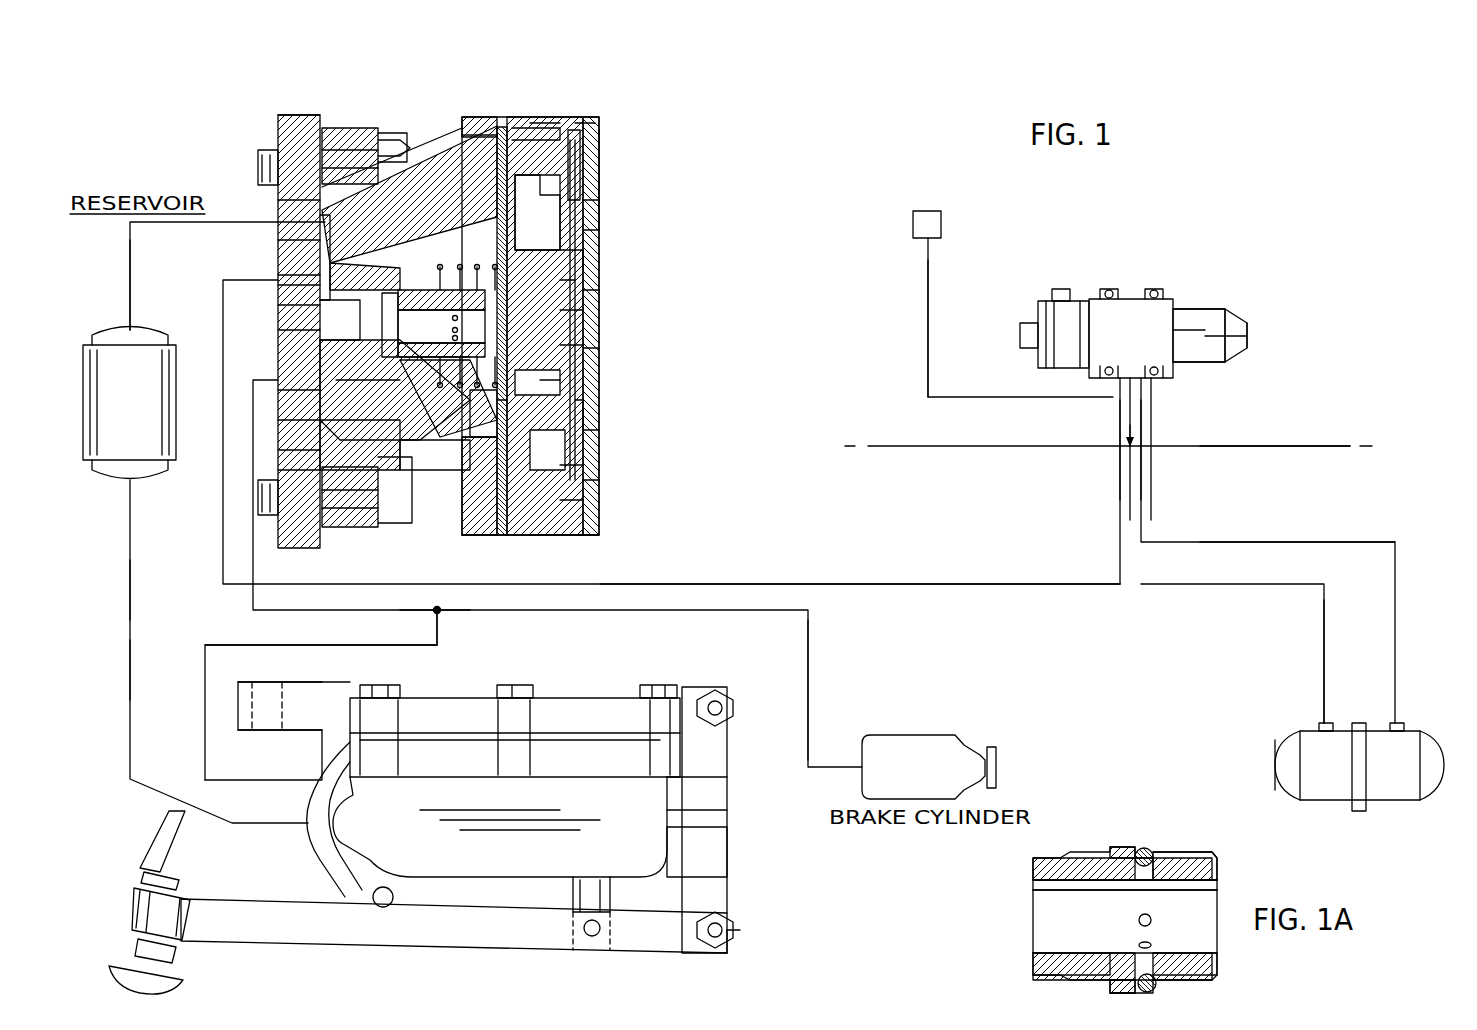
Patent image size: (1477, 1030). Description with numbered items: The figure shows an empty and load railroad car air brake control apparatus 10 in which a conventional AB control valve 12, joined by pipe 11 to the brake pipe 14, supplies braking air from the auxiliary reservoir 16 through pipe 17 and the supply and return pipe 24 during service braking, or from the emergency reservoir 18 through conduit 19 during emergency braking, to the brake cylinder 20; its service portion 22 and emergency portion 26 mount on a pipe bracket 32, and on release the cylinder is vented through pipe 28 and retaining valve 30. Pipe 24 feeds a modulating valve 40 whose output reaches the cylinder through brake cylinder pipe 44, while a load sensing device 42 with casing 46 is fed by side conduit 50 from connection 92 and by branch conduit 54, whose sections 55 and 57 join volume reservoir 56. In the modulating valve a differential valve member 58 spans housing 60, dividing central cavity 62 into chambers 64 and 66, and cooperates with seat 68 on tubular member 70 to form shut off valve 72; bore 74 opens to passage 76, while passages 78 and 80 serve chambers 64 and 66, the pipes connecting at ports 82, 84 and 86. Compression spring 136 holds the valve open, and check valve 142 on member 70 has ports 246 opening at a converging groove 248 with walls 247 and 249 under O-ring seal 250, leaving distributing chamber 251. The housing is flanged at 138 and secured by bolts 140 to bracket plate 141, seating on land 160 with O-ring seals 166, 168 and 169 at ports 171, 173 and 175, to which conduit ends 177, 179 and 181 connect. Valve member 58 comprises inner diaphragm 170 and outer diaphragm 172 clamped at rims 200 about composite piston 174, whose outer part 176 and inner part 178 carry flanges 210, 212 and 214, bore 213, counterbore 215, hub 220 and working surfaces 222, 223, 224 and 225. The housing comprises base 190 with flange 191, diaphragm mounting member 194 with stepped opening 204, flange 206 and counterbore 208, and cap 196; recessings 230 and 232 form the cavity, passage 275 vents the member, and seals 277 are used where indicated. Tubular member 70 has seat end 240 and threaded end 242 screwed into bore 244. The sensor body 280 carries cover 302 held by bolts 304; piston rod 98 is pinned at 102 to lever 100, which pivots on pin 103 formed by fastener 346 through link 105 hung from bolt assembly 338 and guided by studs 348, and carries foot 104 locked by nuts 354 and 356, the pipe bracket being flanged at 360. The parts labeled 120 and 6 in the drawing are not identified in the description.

In FIG. 1, the empty and load railroad car air brake control apparatus 10 is at (1295, 290).
In FIG. 1, the pipe 11 is at (1118, 420).
In FIG. 1, the AB control valve 12 is at (1190, 262).
In FIG. 1, the brake pipe 14 is at (1300, 445).
In FIG. 1, the auxiliary reservoir 16 is at (1440, 748).
In FIG. 1, the pipe 17 is at (1340, 541).
In FIG. 1, the emergency reservoir 18 is at (1275, 758).
In FIG. 1, the conduit 19 is at (1325, 641).
In FIG. 1, the brake cylinder 20 is at (975, 745).
In FIG. 1, the service portion 22 is at (1061, 282).
In FIG. 1, the braking air supply and return pipe 24 is at (1012, 583).
In FIG. 1, the emergency portion 26 is at (1205, 305).
In FIG. 1, the pipe 28 is at (928, 305).
In FIG. 1, the retaining valve 30 is at (948, 218).
In FIG. 1, the pipe bracket 32 is at (1130, 290).
In FIG. 1, the modulating valve 40 is at (618, 150).
In FIG. 1, the load sensing device 42 is at (770, 930).
In FIG. 1, the brake cylinder pipe 44 is at (810, 664).
In FIG. 1, the casing 46 is at (520, 850).
In FIG. 1, the side conduit 50 is at (206, 644).
In FIG. 1, the branch conduit 54 is at (129, 587).
In FIG. 1, the section 55 is at (130, 676).
In FIG. 1, the volume reservoir 56 is at (112, 432).
In FIG. 1, the section 57 is at (130, 260).
In FIG. 1, the differential valve member 58 is at (600, 292).
In FIG. 1, the valve housing 60 is at (520, 135).
In FIG. 1, the central cavity 62 is at (465, 135).
In FIG. 1, the chamber 64 is at (403, 145).
In FIG. 1, the chamber 66 is at (592, 210).
In FIG. 1, the annular valve seat 68 is at (600, 348).
In FIG. 1, the tubular member 70 is at (420, 395).
In FIG. 1A, the tubular member 70 is at (1190, 865).
In FIG. 1, the air flow shut off valve 72 is at (478, 430).
In FIG. 1, the bore 74 is at (415, 300).
In FIG. 1A, the bore 74 is at (1035, 890).
In FIG. 1, the passage 76 is at (300, 345).
In FIG. 1, the passage 78 is at (300, 250).
In FIG. 1, the passage 80 is at (300, 200).
In FIG. 1, the port 82 is at (285, 275).
In FIG. 1, the port 84 is at (290, 372).
In FIG. 1, the port 86 is at (385, 290).
In FIG. 1, the connection 92 is at (440, 613).
In FIG. 1, the piston rod 98 is at (582, 895).
In FIG. 1, the sensing lever 100 is at (310, 940).
In FIG. 1, the pin 102 is at (592, 937).
In FIG. 1, the pivot pin 103 is at (715, 940).
In FIG. 1, the adjustable foot 104 is at (190, 985).
In FIG. 1, the link 105 is at (727, 790).
In FIG. 1A, the valve body 120 is at (1218, 968).
In FIG. 1, the compression spring 136 is at (409, 194).
In FIG. 1, the flange 138 is at (338, 128).
In FIG. 1, the bolts 140 is at (355, 148).
In FIG. 1, the bracket plate 141 is at (300, 125).
In FIG. 1, the check valve 142 is at (462, 400).
In FIG. 1A, the check valve 142 is at (1218, 872).
In FIG. 1, the planar land 160 is at (300, 480).
In FIG. 1, the O-ring seal 166 is at (296, 450).
In FIG. 1, the O-ring seal 168 is at (292, 330).
In FIG. 1, the O-ring seal 169 is at (268, 165).
In FIG. 1, the inner diaphragm 170 is at (500, 432).
In FIG. 1, the port 171 is at (296, 420).
In FIG. 1, the outer diaphragm 172 is at (590, 432).
In FIG. 1, the port 173 is at (285, 305).
In FIG. 1, the composite piston 174 is at (592, 320).
In FIG. 1, the port 175 is at (300, 200).
In FIG. 1, the outer annular piston part 176 is at (580, 410).
In FIG. 1, the end 177 is at (296, 390).
In FIG. 1, the inner piston part 178 is at (577, 265).
In FIG. 1, the end 179 is at (290, 285).
In FIG. 1, the end 181 is at (280, 240).
In FIG. 1, the housing base 190 is at (400, 415).
In FIG. 1, the flange 191 is at (490, 537).
In FIG. 1, the annular diaphragm mounting member 194 is at (570, 537).
In FIG. 1, the housing closure cap 196 is at (600, 522).
In FIG. 1, the rims 200 is at (590, 480).
In FIG. 1, the stepped diameter opening 204 is at (562, 425).
In FIG. 1, the flange 206 is at (553, 170).
In FIG. 1, the counterbore 208 is at (580, 180).
In FIG. 1, the outwardly directed radial flange 210 is at (576, 200).
In FIG. 1, the inwardly directed radial flange 212 is at (582, 360).
In FIG. 1, the bore 213 is at (537, 212).
In FIG. 1, the outwardly directed radial flange 214 is at (577, 375).
In FIG. 1, the counterbore 215 is at (572, 250).
In FIG. 1, the hub portion 220 is at (587, 300).
In FIG. 1, the inwardly directed working surface 222 is at (567, 280).
In FIG. 1, the outer working surface 223 is at (592, 345).
In FIG. 1, the inwardly directed working surface 224 is at (470, 520).
In FIG. 1, the outwardly directed annular working surface 225 is at (587, 240).
In FIG. 1, the recessing 230 is at (477, 165).
In FIG. 1, the recessing 232 is at (582, 465).
In FIG. 1, the end portion 240 is at (470, 265).
In FIG. 1A, the end portion 240 is at (1205, 985).
In FIG. 1, the end portion 242 is at (360, 440).
In FIG. 1A, the end portion 242 is at (1035, 960).
In FIG. 1, the threaded bore 244 is at (370, 380).
In FIG. 1, the lateral ports 246 is at (450, 336).
In FIG. 1A, the lateral ports 246 is at (1138, 920).
In FIG. 1A, the side wall 247 is at (1150, 988).
In FIG. 1A, the circumferential groove 248 is at (1181, 840).
In FIG. 1A, the side wall 249 is at (1125, 990).
In FIG. 1A, the O-ring seal 250 is at (1144, 847).
In FIG. 1A, the annular air flow distributing chamber 251 is at (1150, 972).
In FIG. 1, the passage 275 is at (590, 500).
In FIG. 1, the seals 277 is at (512, 130).
In FIG. 1, the metallic body 280 is at (305, 850).
In FIG. 1, the cover 302 is at (592, 708).
In FIG. 1, the bolts 304 is at (380, 690).
In FIG. 1, the bolt and nut assembly 338 is at (730, 688).
In FIG. 1, the bolt and nut fastening device 346 is at (735, 940).
In FIG. 1, the studs 348 is at (727, 840).
In FIG. 1, the lock nut 354 is at (135, 932).
In FIG. 1, the lock nut 356 is at (140, 880).
In FIG. 1, the flange 360 is at (312, 698).
In FIG. 1, the junction 6 is at (440, 615).